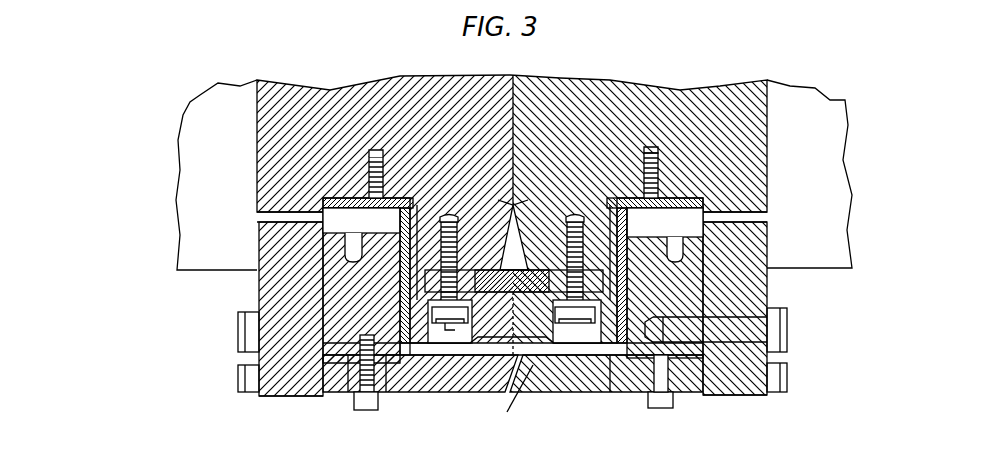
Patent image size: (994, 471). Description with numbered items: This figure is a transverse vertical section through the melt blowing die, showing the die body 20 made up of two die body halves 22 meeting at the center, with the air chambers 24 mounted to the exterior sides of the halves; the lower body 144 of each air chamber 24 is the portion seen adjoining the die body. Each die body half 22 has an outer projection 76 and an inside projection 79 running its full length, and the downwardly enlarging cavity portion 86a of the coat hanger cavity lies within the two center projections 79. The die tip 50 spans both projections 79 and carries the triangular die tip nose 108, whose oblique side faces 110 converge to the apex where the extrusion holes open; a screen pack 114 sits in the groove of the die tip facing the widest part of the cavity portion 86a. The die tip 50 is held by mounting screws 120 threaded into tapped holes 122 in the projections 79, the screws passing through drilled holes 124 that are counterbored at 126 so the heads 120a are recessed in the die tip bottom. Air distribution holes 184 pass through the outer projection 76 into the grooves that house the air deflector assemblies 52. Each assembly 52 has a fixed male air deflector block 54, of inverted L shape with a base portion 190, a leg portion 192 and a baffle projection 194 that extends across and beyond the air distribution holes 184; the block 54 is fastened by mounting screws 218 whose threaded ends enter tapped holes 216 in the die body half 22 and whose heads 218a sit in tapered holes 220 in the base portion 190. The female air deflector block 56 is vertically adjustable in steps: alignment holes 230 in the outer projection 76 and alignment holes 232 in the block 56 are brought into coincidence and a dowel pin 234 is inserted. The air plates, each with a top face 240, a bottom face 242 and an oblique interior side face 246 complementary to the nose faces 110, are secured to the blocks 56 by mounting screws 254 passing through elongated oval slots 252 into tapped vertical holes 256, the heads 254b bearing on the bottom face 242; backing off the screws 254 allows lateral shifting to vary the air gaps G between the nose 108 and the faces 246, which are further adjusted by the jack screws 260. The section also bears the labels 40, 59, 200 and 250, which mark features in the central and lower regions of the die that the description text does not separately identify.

The melt blowing die body 20 is at (767, 78).
The die body halves 22 is at (380, 95).
The air chambers 24 is at (828, 272).
The core insert 40 is at (522, 318).
The die tip 50 is at (605, 355).
The air deflector assemblies 52 is at (712, 190).
The male air deflector block 54 is at (478, 205).
The female air deflector block 56 is at (325, 305).
The clamp plate 59 is at (393, 392).
The outer projection 76 is at (272, 396).
The inside projection 79 is at (515, 205).
The downwardly enlarging cavity portion 86a is at (522, 235).
The die tip nose 108 is at (506, 398).
The side faces of nose 110 is at (513, 364).
The screen pack 114 is at (522, 270).
The mounting screws 120 is at (455, 315).
The heads of the mounting screws 120a is at (458, 330).
The tapped holes 122 is at (460, 245).
The drilled holes 124 is at (400, 303).
The counterbore 126 is at (513, 358).
The lower body of the air chamber 144 is at (520, 95).
The air distribution holes 184 is at (760, 212).
The base portion 190 is at (700, 165).
The leg portion 192 is at (630, 245).
The baffle projection 194 is at (720, 224).
The plate 200 is at (622, 392).
The tapped holes 216 is at (385, 156).
The mounting screws 218 is at (368, 154).
The heads of mounting screws 218a is at (361, 285).
The tapered holes 220 is at (365, 198).
The alignment holes 230 is at (745, 330).
The alignment holes 232 is at (700, 325).
The dowel pin 234 is at (250, 328).
The top face 240 is at (418, 355).
The bottom face 242 is at (440, 392).
The oblique interior side face 246 is at (532, 365).
The bottom bar 250 is at (513, 373).
The elongated oval slots 252 is at (372, 412).
The mounting screws 254 is at (345, 375).
The heads of the locking screws 254b is at (355, 405).
The tapped vertical holes 256 is at (355, 340).
The jack screws 260 is at (250, 375).
The air gaps G is at (520, 418).